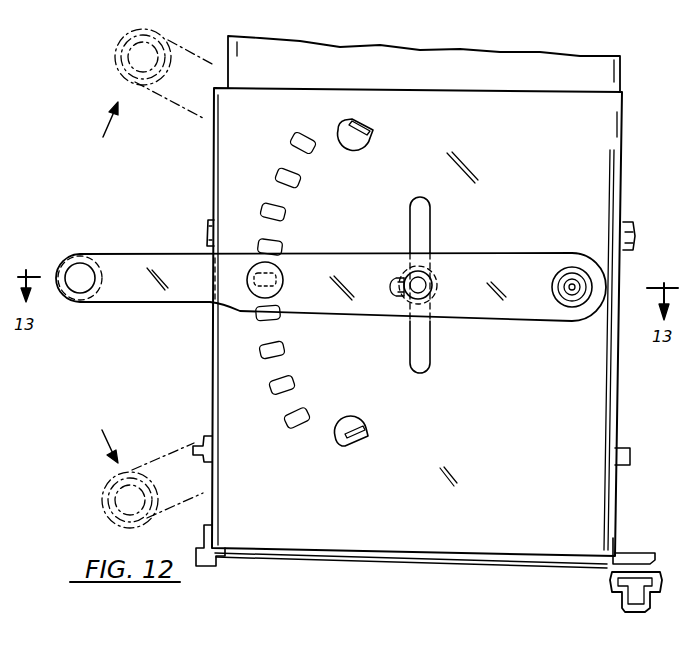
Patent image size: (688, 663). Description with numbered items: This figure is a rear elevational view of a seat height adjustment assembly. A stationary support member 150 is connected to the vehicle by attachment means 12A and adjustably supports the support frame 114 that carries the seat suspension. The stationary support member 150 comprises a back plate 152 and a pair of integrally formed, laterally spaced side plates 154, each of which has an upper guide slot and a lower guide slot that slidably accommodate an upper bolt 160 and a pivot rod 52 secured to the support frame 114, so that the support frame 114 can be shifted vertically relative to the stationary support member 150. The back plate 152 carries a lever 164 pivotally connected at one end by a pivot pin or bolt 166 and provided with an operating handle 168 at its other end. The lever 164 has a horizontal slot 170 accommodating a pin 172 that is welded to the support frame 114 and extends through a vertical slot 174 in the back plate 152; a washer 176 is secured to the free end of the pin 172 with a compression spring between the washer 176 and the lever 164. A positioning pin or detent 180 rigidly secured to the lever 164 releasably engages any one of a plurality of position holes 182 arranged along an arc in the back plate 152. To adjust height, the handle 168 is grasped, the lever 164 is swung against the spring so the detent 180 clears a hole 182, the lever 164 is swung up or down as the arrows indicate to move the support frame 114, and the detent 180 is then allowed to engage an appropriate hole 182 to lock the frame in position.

The support frame 114 is at (610, 75).
The stationary support member 150 is at (622, 165).
The back plate 152 is at (520, 386).
The side plate 154 is at (616, 190).
The upper bolt 160 is at (208, 222).
The pivot rod 52 is at (200, 440).
The attachment means 12A is at (648, 575).
The lever 164 is at (88, 262).
The operating handle 168 is at (102, 266).
The positioning pin or detent 180 is at (280, 270).
The position holes 182 is at (280, 212).
The vertical slot 174 is at (432, 214).
The pin 172 is at (425, 298).
The washer 176 is at (404, 300).
The horizontal slot 170 is at (398, 296).
The pivot pin or bolt 166 is at (574, 280).